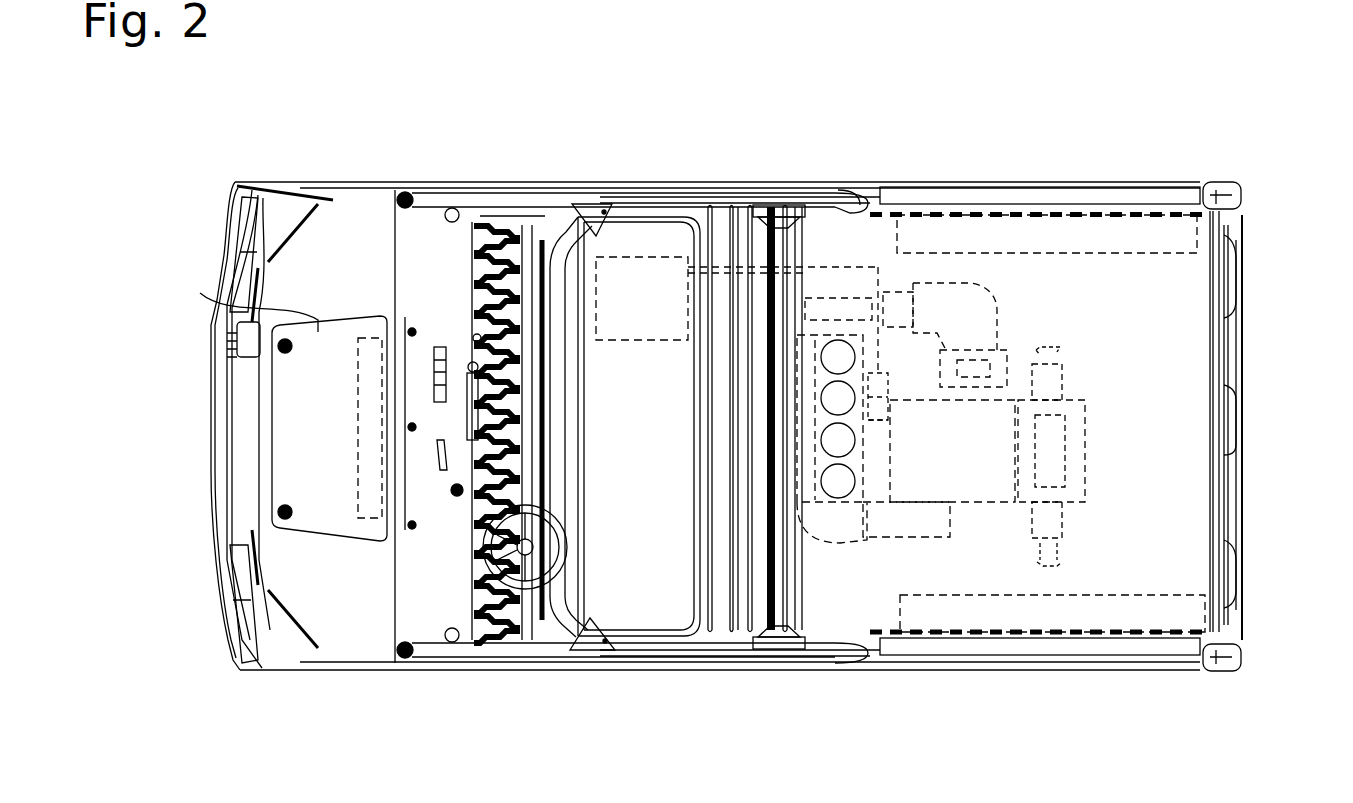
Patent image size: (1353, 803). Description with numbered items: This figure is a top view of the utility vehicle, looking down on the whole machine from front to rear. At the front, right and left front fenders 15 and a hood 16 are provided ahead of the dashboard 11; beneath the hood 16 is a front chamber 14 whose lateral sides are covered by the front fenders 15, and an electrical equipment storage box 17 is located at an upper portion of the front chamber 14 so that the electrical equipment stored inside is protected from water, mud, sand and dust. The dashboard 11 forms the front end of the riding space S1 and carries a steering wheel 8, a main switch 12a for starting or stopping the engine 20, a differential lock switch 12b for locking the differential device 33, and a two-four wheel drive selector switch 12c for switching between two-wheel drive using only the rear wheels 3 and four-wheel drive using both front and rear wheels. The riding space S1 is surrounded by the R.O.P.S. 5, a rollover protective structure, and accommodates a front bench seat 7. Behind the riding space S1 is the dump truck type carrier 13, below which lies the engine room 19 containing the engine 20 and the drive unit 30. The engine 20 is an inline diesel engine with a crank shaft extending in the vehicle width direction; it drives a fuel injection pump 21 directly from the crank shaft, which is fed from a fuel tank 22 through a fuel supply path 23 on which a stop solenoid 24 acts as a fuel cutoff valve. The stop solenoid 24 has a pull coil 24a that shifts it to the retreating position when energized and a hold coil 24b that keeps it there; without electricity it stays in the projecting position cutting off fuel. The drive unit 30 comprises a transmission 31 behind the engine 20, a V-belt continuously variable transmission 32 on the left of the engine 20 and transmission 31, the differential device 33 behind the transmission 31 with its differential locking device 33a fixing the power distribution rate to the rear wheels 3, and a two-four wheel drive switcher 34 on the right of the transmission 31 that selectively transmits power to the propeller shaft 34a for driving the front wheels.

The rear wheels 3 is at (1232, 262).
The R.O.P.S. 5 is at (583, 200).
The front bench seat 7 is at (648, 582).
The steering wheel 8 is at (567, 540).
The dashboard 11 is at (387, 540).
The main switch 12a is at (457, 497).
The differential lock switch 12b is at (476, 336).
The two-four wheel drive selector switch 12c is at (470, 364).
The carrier 13 is at (1245, 338).
The front chamber 14 is at (330, 478).
The front fenders 15 is at (310, 190).
The hood 16 is at (222, 298).
The electrical equipment storage box 17 is at (370, 338).
The engine room 19 is at (883, 580).
The engine 20 is at (870, 380).
The fuel injection pump 21 is at (900, 470).
The fuel tank 22 is at (633, 342).
The fuel supply path 23 is at (858, 265).
The stop solenoid 24 is at (885, 380).
The pull coil 24a is at (888, 385).
The hold coil 24b is at (890, 407).
The drive unit 30 is at (1077, 379).
The transmission 31 is at (977, 505).
The V-belt continuously variable transmission 32 is at (840, 548).
The differential device 33 is at (1087, 468).
The differential locking device 33a is at (1088, 427).
The two-four wheel drive switcher 34 is at (993, 303).
The propeller shaft 34a is at (835, 297).
The riding space S1 is at (683, 594).